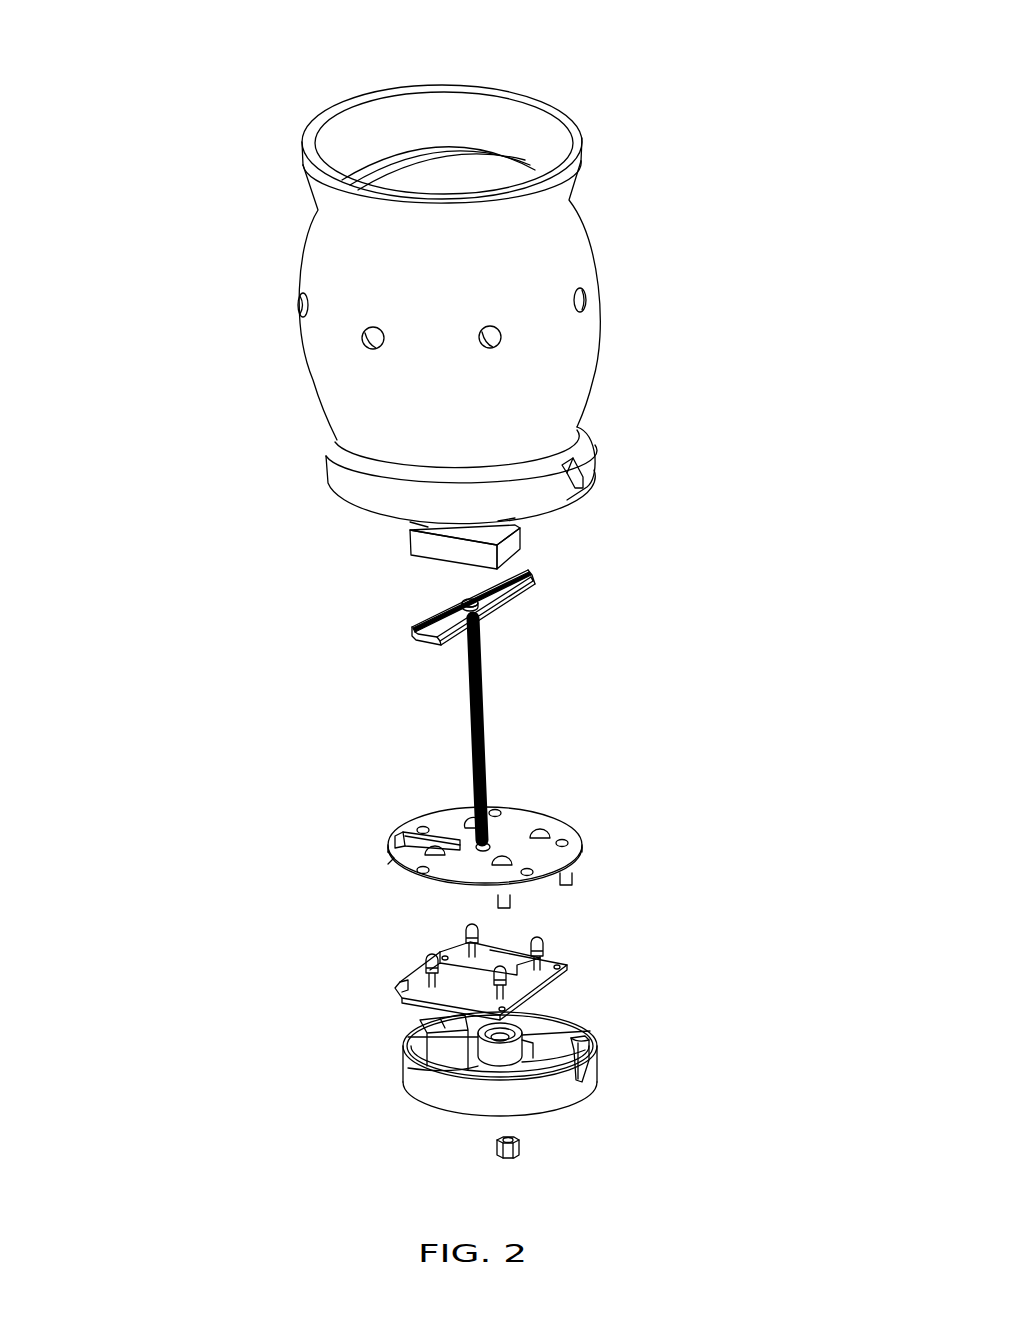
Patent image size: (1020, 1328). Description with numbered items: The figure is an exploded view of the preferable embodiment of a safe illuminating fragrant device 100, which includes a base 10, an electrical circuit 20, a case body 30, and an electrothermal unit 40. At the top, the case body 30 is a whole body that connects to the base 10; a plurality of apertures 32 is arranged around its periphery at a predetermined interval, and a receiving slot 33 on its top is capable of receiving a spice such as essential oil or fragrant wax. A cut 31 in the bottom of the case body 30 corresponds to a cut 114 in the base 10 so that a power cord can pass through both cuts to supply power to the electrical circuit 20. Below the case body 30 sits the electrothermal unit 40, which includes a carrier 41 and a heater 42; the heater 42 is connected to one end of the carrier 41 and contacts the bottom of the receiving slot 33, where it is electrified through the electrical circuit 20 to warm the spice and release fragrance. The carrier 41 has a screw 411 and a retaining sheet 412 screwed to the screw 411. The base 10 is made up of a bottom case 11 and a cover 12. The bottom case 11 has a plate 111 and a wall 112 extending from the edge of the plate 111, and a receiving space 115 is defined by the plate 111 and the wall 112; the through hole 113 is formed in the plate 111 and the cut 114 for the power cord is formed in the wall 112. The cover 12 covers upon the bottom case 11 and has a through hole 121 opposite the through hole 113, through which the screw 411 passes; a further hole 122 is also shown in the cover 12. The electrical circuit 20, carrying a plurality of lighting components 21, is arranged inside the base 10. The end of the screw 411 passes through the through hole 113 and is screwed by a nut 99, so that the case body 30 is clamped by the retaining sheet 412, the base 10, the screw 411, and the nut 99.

The safe illuminating fragrant device 100 is at (263, 92).
The case body 30 is at (560, 250).
The receiving slot 33 is at (487, 128).
The apertures 32 is at (368, 348).
The cut 31 is at (593, 443).
The electrothermal unit 40 is at (145, 528).
The carrier 41 is at (222, 612).
The heater 42 is at (410, 538).
The retaining sheet 412 is at (420, 622).
The screw 411 is at (470, 737).
The cover 12 is at (386, 866).
The through hole 121 is at (492, 845).
The hole 122 is at (548, 833).
The electrical circuit 20 is at (500, 958).
The lighting component 21 is at (547, 947).
The base 10 is at (182, 843).
The bottom case 11 is at (237, 1041).
The receiving space 115 is at (553, 1040).
The wall 112 is at (425, 1085).
The plate 111 is at (443, 1110).
The cut 114 is at (592, 1058).
The through hole 113 is at (523, 1055).
The nut 99 is at (520, 1147).